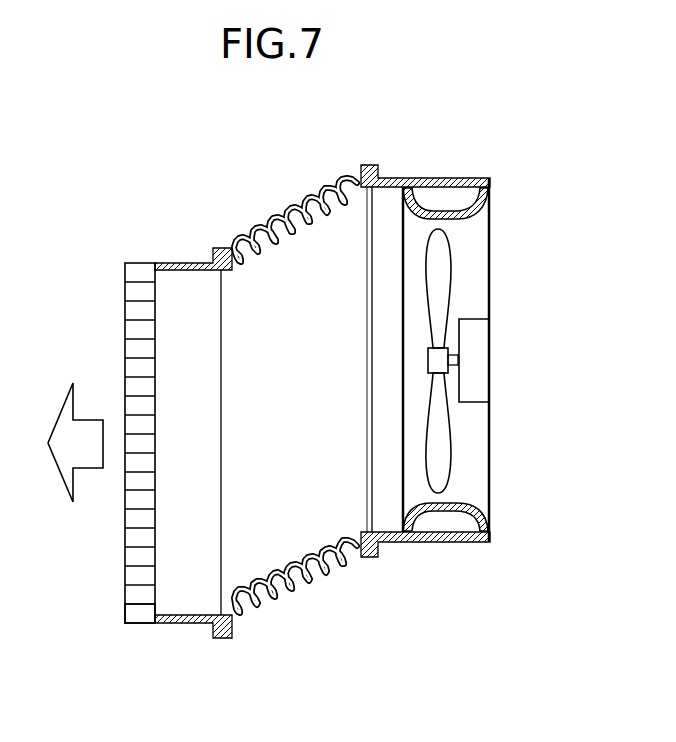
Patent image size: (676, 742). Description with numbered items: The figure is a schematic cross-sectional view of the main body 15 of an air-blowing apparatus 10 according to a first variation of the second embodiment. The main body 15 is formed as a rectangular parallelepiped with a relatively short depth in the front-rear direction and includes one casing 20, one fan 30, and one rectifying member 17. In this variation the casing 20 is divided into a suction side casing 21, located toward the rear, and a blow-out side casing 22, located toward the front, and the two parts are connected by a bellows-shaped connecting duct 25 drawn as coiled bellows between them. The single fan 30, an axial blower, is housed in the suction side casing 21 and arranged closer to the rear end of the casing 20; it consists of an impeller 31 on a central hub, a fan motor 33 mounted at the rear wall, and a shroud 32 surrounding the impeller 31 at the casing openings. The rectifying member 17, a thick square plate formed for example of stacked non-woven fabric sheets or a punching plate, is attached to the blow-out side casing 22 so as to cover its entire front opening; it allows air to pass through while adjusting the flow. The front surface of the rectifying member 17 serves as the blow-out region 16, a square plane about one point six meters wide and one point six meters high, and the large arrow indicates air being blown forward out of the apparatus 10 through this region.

The air-blowing apparatus 10 is at (157, 165).
The main body 15 is at (178, 262).
The blow-out region 16 is at (124, 307).
The rectifying member 17 is at (140, 617).
The casing 20 is at (440, 178).
The suction side casing 21 is at (437, 543).
The blow-out side casing 22 is at (185, 627).
The bellows-shaped connecting duct 25 is at (293, 592).
The fan 30 is at (463, 257).
The impeller 31 is at (425, 278).
The shroud 32 is at (460, 503).
The fan motor 33 is at (473, 402).